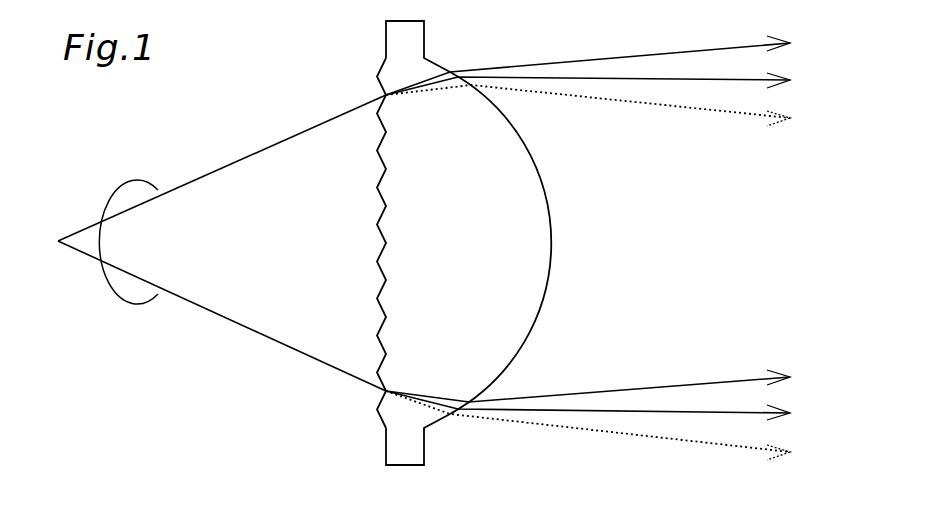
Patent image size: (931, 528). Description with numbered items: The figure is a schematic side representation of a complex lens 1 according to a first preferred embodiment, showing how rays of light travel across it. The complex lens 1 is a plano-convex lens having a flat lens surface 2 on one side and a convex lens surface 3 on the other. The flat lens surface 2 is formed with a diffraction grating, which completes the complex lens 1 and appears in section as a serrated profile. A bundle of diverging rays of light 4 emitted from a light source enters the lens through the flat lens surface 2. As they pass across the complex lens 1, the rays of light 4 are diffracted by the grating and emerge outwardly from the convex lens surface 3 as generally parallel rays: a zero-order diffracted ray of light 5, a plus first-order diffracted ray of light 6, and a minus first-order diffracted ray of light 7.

The complex lens 1 is at (390, 72).
The flat lens surface 2 is at (387, 340).
The convex lens surface 3 is at (530, 331).
The bundle of diverging rays of light 4 is at (121, 266).
The zero-order diffracted ray of light 5 is at (713, 79).
The + first-order diffracted ray of light 6 is at (653, 54).
The − first-order diffracted ray of light 7 is at (694, 108).